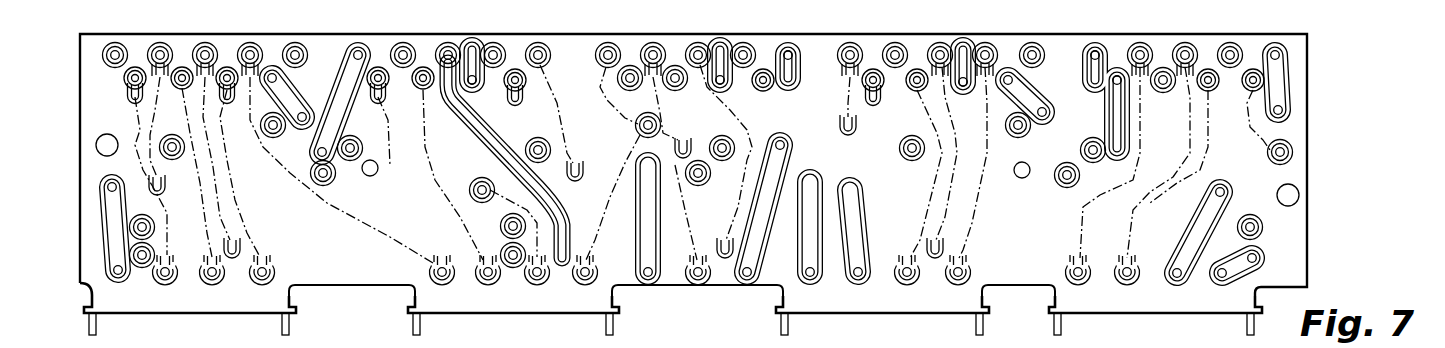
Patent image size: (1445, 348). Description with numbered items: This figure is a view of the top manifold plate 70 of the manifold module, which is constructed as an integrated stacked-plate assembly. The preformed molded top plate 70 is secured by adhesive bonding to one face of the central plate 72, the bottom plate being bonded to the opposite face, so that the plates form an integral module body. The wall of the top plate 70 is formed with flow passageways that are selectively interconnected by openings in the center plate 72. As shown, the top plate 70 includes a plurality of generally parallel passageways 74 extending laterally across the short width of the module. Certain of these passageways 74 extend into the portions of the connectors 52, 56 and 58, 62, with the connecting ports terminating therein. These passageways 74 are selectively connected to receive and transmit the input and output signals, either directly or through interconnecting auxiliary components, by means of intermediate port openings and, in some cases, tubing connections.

The connector 52 is at (101, 55).
The connector 56 is at (1306, 63).
The connector 58 is at (186, 314).
The connector 62 is at (1186, 314).
The top plate 70 is at (372, 274).
The central plate 72 is at (340, 337).
The passageways 74 is at (233, 232).